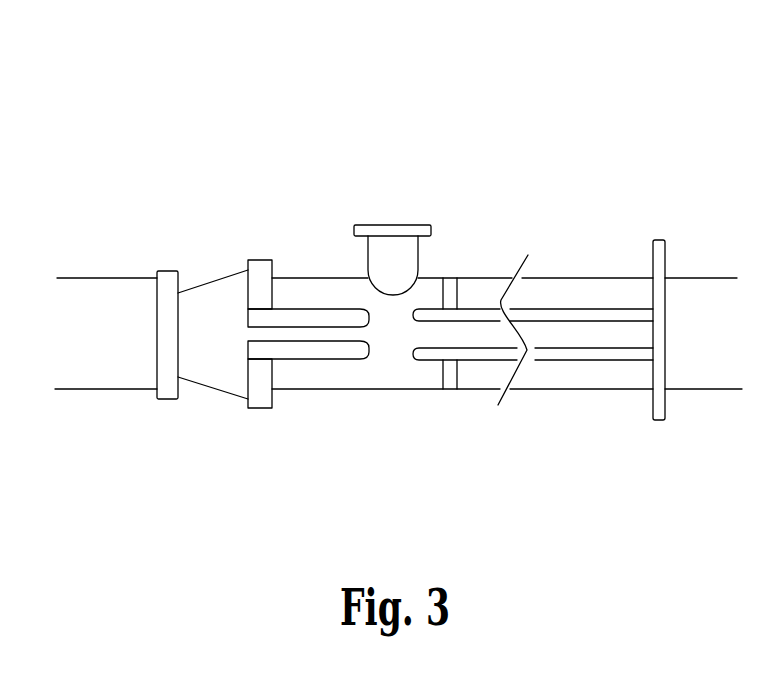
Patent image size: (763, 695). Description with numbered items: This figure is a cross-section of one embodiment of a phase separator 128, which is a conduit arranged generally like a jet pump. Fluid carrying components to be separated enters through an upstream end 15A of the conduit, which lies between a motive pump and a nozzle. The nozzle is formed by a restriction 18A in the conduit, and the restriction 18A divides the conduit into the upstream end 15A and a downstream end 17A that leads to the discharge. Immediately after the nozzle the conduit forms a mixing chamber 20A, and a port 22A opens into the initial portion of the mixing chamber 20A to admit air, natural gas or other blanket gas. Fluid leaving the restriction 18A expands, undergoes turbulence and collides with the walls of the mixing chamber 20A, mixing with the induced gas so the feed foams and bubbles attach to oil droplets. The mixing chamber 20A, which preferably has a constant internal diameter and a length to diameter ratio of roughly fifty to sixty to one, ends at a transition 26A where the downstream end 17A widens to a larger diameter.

The phase separator 128 is at (291, 125).
The upstream end 15A is at (100, 389).
The downstream end 17A is at (702, 389).
The restriction 18A is at (317, 352).
The mixing chamber 20A is at (590, 360).
The port 22A is at (418, 262).
The transition 26A is at (656, 240).